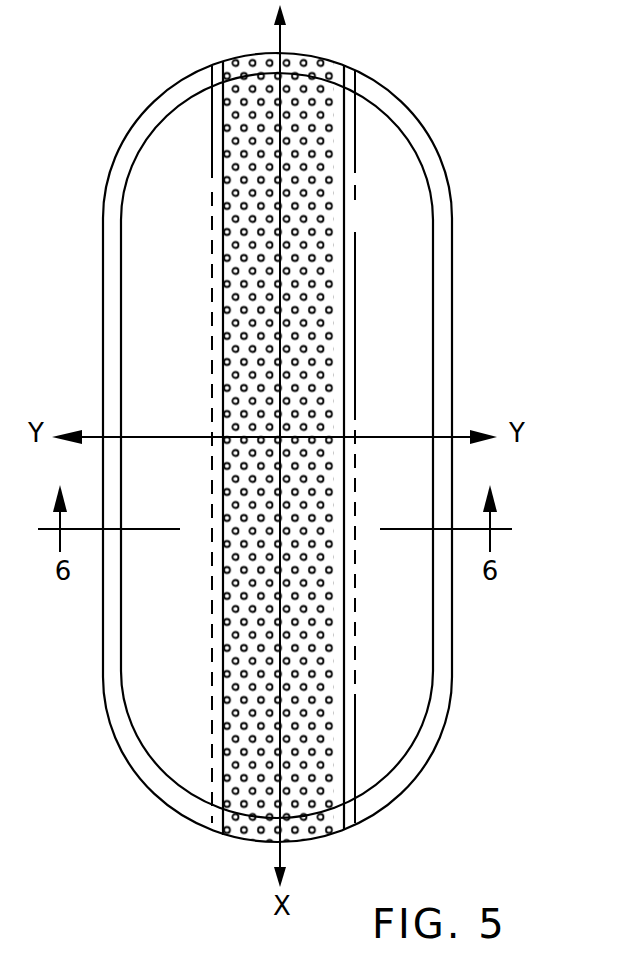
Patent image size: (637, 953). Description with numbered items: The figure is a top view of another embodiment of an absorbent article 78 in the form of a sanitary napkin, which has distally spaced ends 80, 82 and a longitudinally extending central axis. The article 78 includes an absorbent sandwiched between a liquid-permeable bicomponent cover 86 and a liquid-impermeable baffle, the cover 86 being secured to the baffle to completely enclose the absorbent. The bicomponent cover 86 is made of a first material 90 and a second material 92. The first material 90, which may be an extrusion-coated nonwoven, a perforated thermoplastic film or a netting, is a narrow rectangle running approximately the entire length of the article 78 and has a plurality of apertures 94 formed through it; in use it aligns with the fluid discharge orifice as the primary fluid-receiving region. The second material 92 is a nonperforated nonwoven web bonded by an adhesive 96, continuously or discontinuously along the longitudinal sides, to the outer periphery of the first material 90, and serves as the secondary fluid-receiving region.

The absorbent article 78 is at (350, 441).
The end 80 is at (333, 61).
The end 82 is at (368, 820).
The bicomponent cover 86 is at (400, 346).
The first material 90 is at (279, 447).
The second material 92 is at (181, 291).
The apertures 94 is at (327, 585).
The adhesive 96 is at (218, 684).